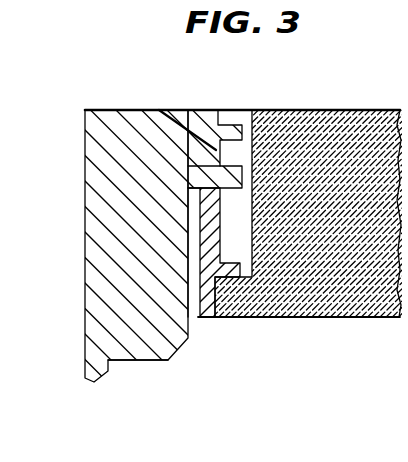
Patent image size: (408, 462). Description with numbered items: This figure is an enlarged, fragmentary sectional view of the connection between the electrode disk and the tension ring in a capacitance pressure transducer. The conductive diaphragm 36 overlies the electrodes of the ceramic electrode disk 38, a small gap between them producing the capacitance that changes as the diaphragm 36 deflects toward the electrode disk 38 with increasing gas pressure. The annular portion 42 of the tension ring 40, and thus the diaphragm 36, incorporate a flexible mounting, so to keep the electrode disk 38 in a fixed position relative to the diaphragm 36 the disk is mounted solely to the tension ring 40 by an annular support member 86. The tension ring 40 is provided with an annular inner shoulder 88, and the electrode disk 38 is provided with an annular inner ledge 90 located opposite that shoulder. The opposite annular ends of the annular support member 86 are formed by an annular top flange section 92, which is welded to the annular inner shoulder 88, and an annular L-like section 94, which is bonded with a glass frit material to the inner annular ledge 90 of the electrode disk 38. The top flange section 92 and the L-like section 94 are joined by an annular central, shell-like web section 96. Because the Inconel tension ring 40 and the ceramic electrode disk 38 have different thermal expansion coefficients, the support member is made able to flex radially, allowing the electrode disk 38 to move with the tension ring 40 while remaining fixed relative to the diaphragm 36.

The diaphragm 36 is at (350, 102).
The electrode disk 38 is at (350, 330).
The tension ring 40 is at (145, 376).
The annular portion 42 is at (96, 134).
The annular support member 86 is at (232, 216).
The annular inner shoulder 88 is at (208, 165).
The annular inner ledge 90 is at (226, 297).
The annular top flange section 92 is at (159, 110).
The annular L-like section 94 is at (203, 318).
The shell-like web section 96 is at (202, 218).